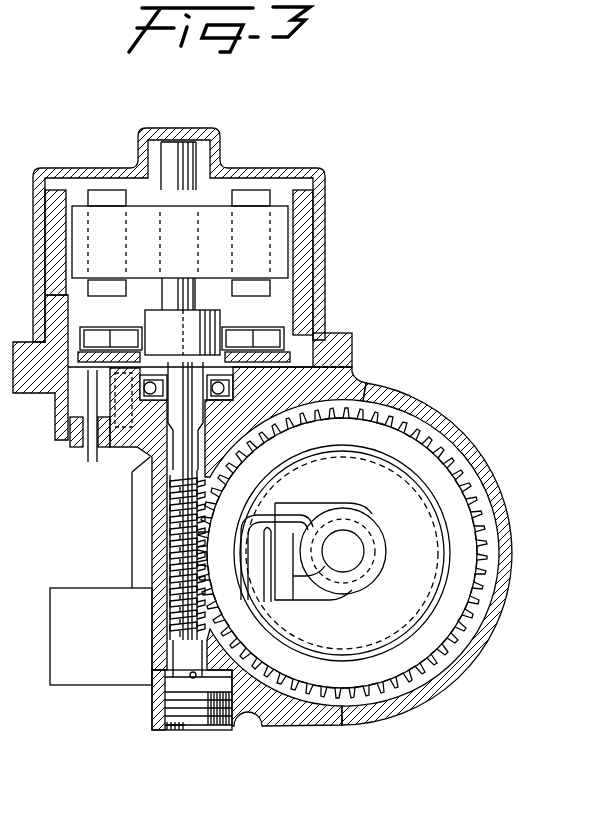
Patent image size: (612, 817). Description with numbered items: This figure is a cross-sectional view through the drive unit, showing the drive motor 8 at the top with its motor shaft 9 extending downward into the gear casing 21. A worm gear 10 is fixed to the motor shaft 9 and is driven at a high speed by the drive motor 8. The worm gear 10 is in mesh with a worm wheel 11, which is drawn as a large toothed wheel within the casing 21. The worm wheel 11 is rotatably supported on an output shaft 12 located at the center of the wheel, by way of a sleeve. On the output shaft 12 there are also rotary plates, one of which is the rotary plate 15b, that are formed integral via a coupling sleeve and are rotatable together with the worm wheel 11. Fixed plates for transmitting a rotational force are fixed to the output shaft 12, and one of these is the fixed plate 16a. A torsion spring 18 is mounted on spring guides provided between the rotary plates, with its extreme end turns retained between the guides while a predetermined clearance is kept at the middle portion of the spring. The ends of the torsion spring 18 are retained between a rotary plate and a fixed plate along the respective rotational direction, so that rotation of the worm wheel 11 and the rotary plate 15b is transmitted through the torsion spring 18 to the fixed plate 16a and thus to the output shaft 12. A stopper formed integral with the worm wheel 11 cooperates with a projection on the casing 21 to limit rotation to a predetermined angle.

The drive motor 8 is at (265, 222).
The motor shaft 9 is at (173, 452).
The worm gear 10 is at (150, 560).
The worm wheel 11 is at (400, 415).
The output shaft 12 is at (357, 540).
The torsion spring 18 is at (435, 496).
The casing 21 is at (506, 609).
The rotary plate 15b is at (246, 600).
The fixed plate 16a is at (290, 600).